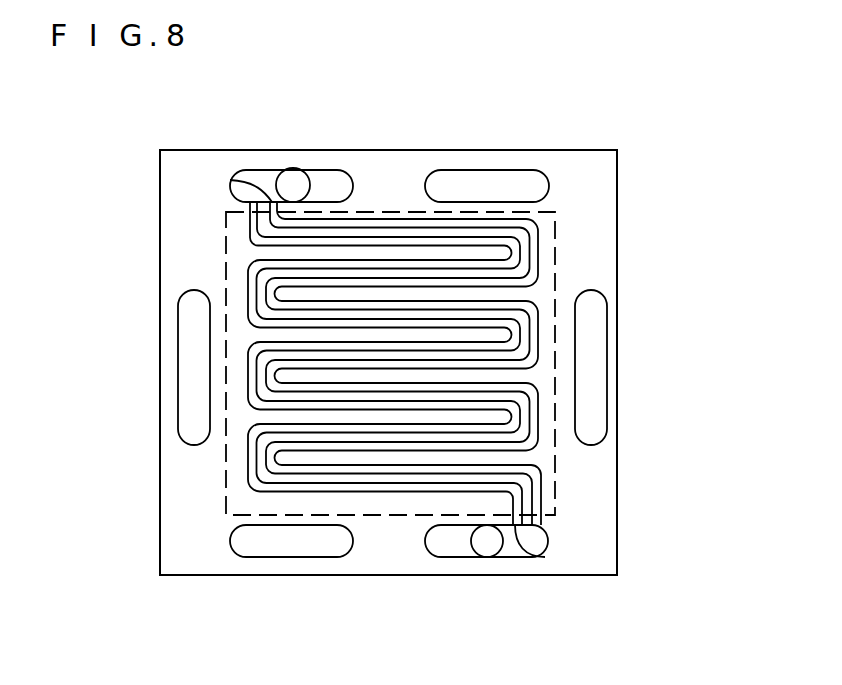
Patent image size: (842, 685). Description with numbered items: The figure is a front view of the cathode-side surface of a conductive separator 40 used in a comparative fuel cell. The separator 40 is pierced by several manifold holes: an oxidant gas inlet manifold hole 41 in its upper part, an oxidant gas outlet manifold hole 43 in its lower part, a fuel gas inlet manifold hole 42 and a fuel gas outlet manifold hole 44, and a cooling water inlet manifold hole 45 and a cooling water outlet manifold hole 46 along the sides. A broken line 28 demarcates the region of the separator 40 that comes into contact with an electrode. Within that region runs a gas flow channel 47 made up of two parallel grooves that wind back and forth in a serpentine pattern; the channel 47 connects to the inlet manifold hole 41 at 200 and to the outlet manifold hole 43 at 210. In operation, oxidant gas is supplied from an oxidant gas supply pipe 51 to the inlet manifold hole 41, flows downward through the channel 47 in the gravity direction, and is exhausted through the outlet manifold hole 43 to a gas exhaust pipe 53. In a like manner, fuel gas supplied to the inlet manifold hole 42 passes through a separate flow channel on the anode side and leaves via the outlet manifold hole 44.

The separator 40 is at (585, 150).
The oxidant gas inlet manifold hole 41 is at (257, 170).
The fuel gas inlet manifold hole 42 is at (487, 170).
The oxidant gas outlet manifold hole 43 is at (525, 557).
The fuel gas outlet manifold hole 44 is at (283, 557).
The cooling water inlet manifold hole 45 is at (178, 352).
The cooling water outlet manifold hole 46 is at (606, 397).
The gas flow channel 47 is at (388, 213).
The broken line 28 is at (555, 268).
The oxidant gas supply pipe 51 is at (293, 182).
The gas exhaust pipe 53 is at (485, 547).
The connection of gas flow channel to inlet manifold hole 200 is at (230, 180).
The connection of gas flow channel to outlet manifold hole 210 is at (545, 557).